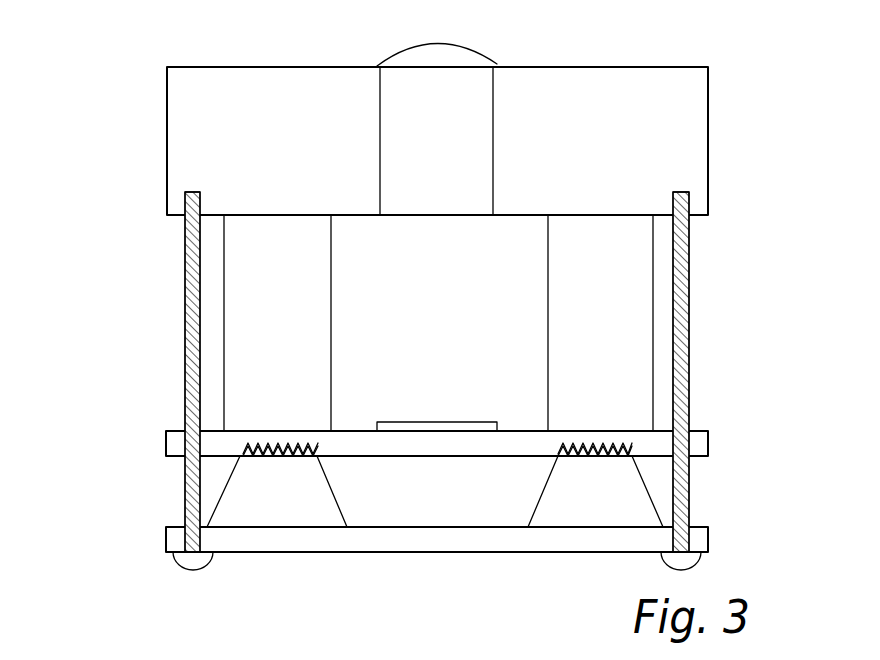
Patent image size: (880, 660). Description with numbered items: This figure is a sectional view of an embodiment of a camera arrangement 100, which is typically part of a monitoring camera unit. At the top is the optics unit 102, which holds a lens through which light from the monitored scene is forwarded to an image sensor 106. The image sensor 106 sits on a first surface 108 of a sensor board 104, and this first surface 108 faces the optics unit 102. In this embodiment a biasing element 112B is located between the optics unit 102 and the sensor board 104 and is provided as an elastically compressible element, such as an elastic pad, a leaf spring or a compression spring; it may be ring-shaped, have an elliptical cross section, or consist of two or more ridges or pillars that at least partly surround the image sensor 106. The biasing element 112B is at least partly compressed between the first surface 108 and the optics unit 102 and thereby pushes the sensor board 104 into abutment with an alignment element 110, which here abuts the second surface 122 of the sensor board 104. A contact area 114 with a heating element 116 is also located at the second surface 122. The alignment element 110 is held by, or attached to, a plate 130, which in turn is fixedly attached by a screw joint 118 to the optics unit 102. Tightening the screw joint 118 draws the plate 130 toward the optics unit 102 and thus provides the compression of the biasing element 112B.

The camera arrangement 100 is at (133, 80).
The optics unit 102 is at (603, 67).
The sensor board 104 is at (502, 457).
The image sensor 106 is at (440, 422).
The first surface 108 is at (345, 430).
The alignment element 110 is at (298, 499).
The biasing element 112B is at (303, 335).
The contact area 114 is at (250, 445).
The heating element 116 is at (302, 456).
The screw joint 118 is at (185, 272).
The second surface 122 is at (363, 457).
The plate 130 is at (400, 552).